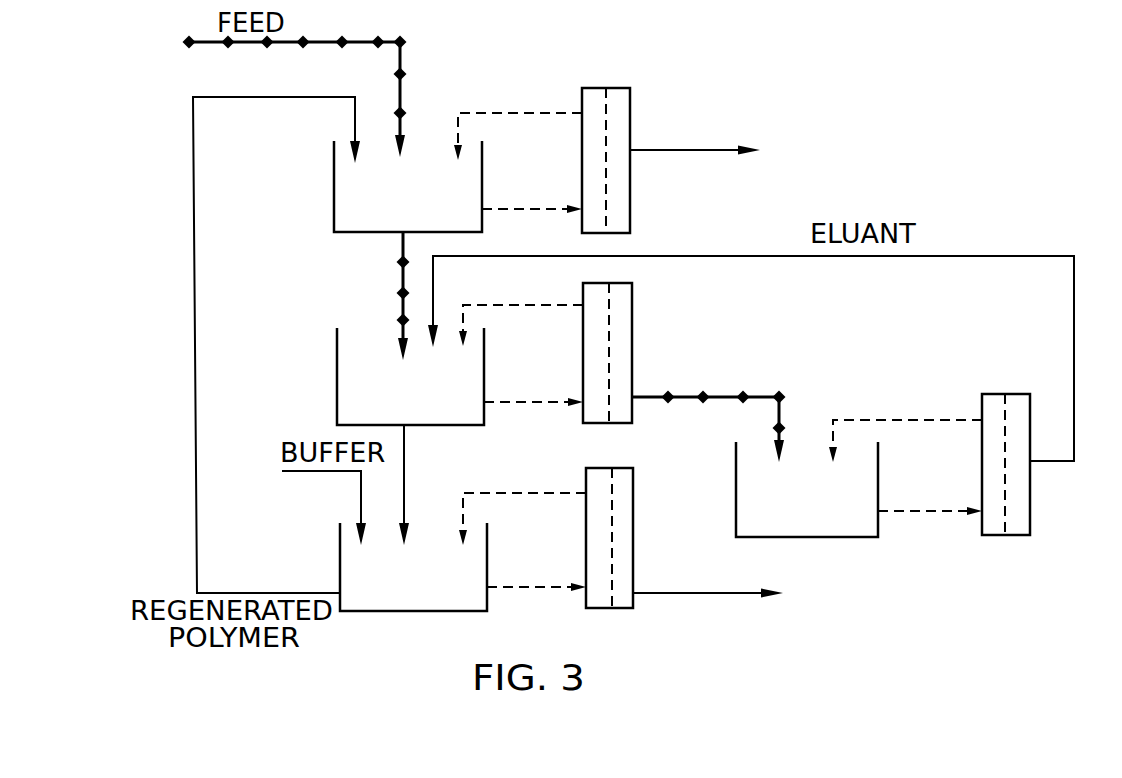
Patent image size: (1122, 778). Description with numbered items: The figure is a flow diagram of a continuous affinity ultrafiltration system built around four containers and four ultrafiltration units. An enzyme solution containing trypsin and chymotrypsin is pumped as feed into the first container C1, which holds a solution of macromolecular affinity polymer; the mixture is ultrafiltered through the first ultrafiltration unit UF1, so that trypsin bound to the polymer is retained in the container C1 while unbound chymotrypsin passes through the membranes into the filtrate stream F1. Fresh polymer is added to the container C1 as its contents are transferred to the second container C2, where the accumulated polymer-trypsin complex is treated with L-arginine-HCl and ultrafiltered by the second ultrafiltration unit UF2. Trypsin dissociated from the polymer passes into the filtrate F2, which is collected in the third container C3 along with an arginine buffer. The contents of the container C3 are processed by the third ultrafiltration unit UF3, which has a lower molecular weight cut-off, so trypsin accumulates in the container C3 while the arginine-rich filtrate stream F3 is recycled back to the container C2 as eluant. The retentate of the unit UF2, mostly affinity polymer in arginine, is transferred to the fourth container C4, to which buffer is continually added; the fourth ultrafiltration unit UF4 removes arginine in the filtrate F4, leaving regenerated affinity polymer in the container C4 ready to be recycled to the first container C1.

The container C1 is at (408, 186).
The container C2 is at (410, 376).
The container C3 is at (807, 489).
The container C4 is at (413, 567).
The ultrafiltration unit UF1 is at (572, 160).
The ultrafiltration unit UF2 is at (577, 353).
The ultrafiltration unit UF3 is at (962, 464).
The ultrafiltration unit UF4 is at (576, 538).
The filtrate stream F1 is at (695, 169).
The filtrate F2 is at (709, 407).
The filtrate stream F3 is at (1095, 380).
The filtrate F4 is at (729, 592).